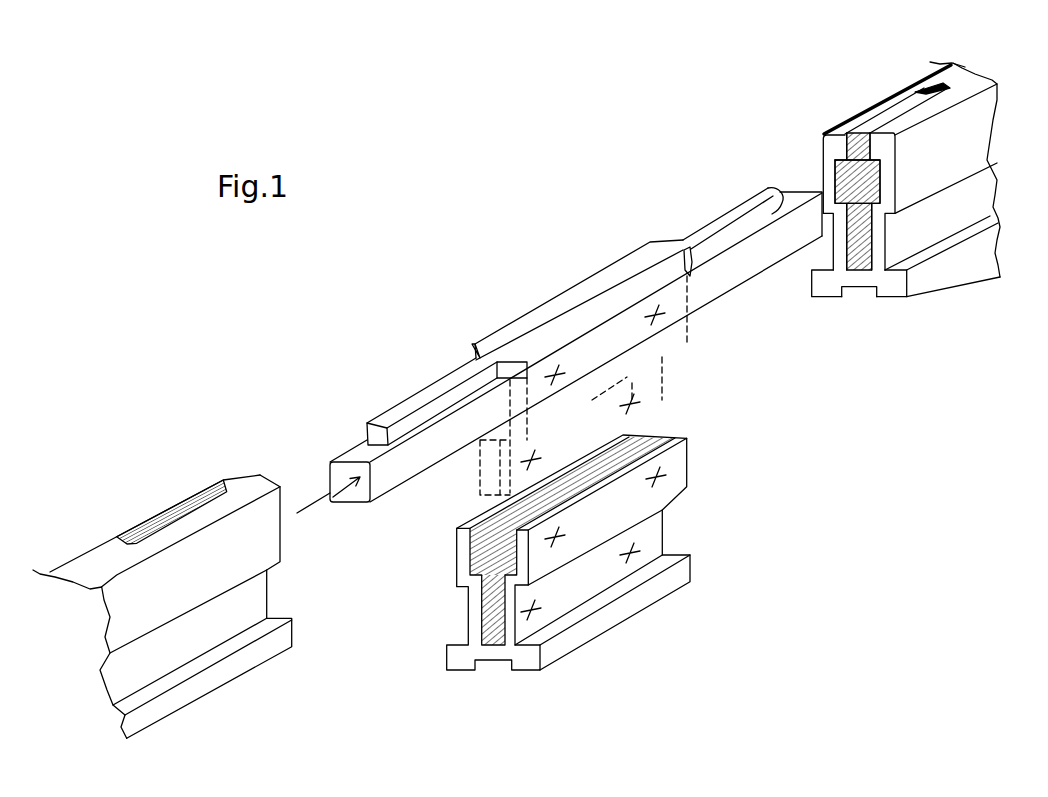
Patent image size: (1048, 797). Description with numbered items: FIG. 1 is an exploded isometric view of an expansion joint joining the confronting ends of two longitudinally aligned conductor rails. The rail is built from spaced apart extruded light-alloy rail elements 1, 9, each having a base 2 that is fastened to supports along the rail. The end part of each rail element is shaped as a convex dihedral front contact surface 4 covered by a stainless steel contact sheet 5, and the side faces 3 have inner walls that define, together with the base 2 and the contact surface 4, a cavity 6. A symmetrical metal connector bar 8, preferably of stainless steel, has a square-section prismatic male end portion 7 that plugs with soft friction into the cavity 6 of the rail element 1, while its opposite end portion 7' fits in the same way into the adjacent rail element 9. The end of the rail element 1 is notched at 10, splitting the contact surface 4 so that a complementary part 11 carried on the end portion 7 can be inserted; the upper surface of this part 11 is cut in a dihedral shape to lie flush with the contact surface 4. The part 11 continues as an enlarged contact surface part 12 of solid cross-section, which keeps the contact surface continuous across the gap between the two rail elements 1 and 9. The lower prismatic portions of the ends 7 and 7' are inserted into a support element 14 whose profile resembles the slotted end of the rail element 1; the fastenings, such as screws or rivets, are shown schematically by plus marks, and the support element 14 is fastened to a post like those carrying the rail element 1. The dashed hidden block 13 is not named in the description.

The rail element 1 is at (937, 220).
The base 2 is at (893, 291).
The side faces 3 is at (953, 164).
The front contact surface 4 is at (961, 92).
The contact sheet 5 is at (840, 130).
The cavity 6 is at (857, 174).
The male end portion 7 is at (576, 347).
The end portion 7' is at (340, 509).
The connector bar 8 is at (547, 295).
The rail element 9 is at (247, 525).
The notch 10 is at (858, 134).
The complementary part 11 is at (725, 223).
The enlarged contact surface part 12 is at (628, 267).
The hidden spacer block 13 is at (620, 347).
The support element 14 is at (674, 484).